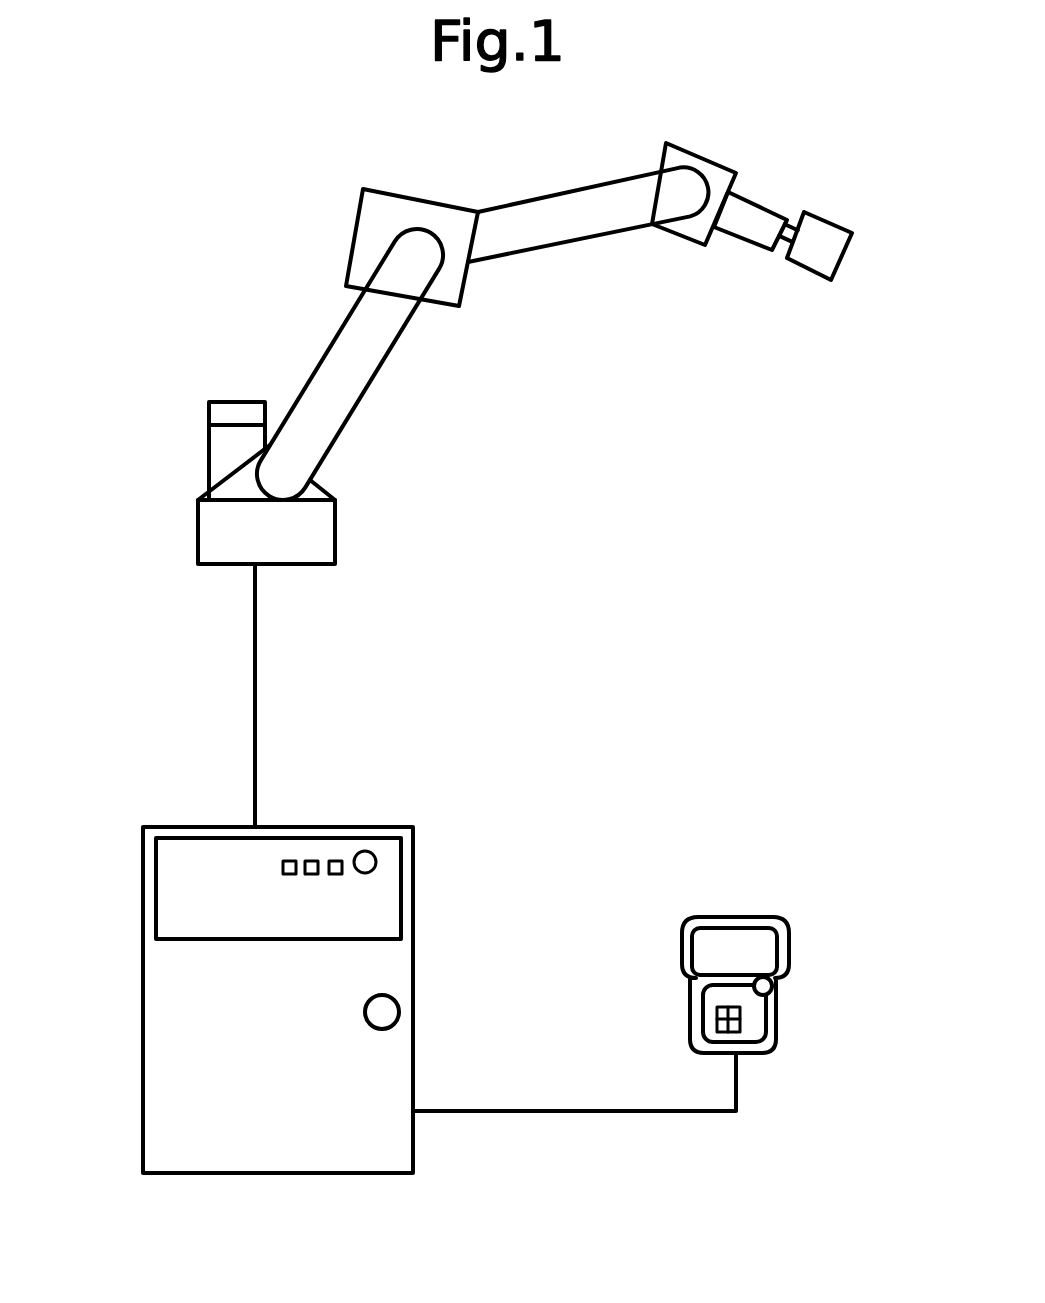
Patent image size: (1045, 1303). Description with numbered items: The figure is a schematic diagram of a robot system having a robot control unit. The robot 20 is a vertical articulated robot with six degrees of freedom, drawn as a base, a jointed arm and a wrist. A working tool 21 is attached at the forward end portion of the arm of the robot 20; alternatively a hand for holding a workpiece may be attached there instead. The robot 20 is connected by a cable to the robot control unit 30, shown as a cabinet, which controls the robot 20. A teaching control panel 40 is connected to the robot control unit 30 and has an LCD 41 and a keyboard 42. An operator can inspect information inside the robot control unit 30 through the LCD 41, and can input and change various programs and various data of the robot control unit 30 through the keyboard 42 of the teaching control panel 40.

The robot 20 is at (565, 485).
The working tool 21 is at (827, 237).
The robot control unit 30 is at (143, 922).
The teaching control panel 40 is at (791, 946).
The LCD 41 is at (763, 947).
The keyboard 42 is at (740, 1013).